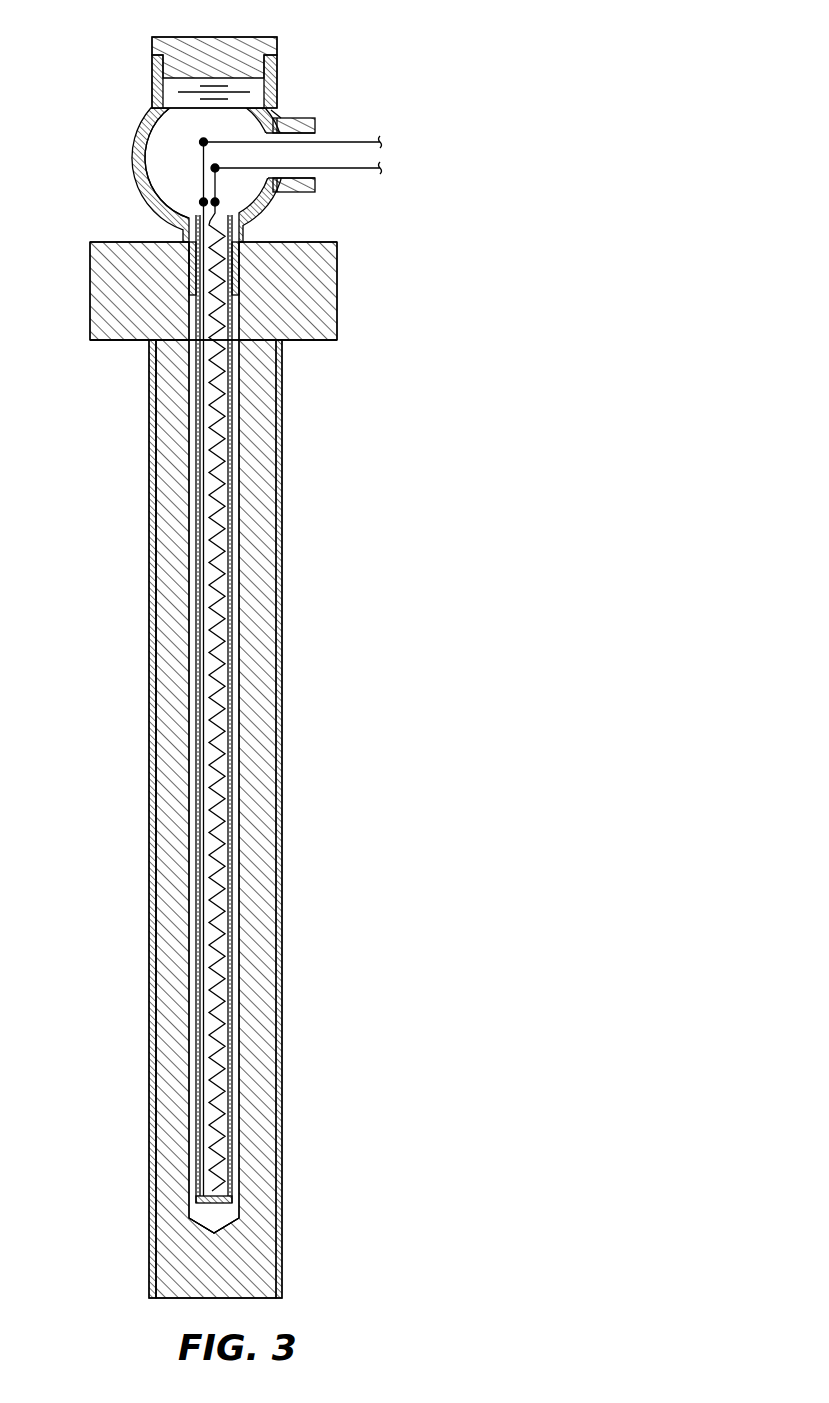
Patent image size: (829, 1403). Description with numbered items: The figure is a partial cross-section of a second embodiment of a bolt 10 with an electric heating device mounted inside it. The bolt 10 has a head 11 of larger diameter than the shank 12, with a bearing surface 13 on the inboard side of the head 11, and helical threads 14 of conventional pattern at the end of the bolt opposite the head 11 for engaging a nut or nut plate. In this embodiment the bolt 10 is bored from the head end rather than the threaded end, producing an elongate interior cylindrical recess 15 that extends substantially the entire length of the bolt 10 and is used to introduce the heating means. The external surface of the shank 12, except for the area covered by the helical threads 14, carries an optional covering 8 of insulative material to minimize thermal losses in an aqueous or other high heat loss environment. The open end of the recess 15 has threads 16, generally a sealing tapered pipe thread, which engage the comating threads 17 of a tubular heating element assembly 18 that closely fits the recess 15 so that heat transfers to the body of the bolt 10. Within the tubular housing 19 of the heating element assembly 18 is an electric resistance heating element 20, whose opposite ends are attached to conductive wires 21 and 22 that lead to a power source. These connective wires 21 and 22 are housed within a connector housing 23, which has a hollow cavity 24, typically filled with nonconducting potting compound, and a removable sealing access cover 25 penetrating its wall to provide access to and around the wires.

The bolt 10 is at (345, 821).
The covering of insulative material 8 is at (282, 508).
The head 11 is at (337, 300).
The shank 12 is at (257, 610).
The bearing surface 13 is at (307, 342).
The helical threads 14 is at (157, 1242).
The interior cylindrical recess 15 is at (239, 1210).
The threads 16 is at (239, 255).
The comating threads 17 is at (186, 248).
The tubular heating element assembly 18 is at (230, 775).
The tubular housing 19 is at (227, 825).
The electric resistance heating element 20 is at (205, 665).
The conductive wire 21 is at (218, 180).
The conductive wire 22 is at (204, 142).
The connector housing 23 is at (147, 113).
The hollow cavity 24 is at (133, 168).
The removable sealing access cover 25 is at (233, 37).